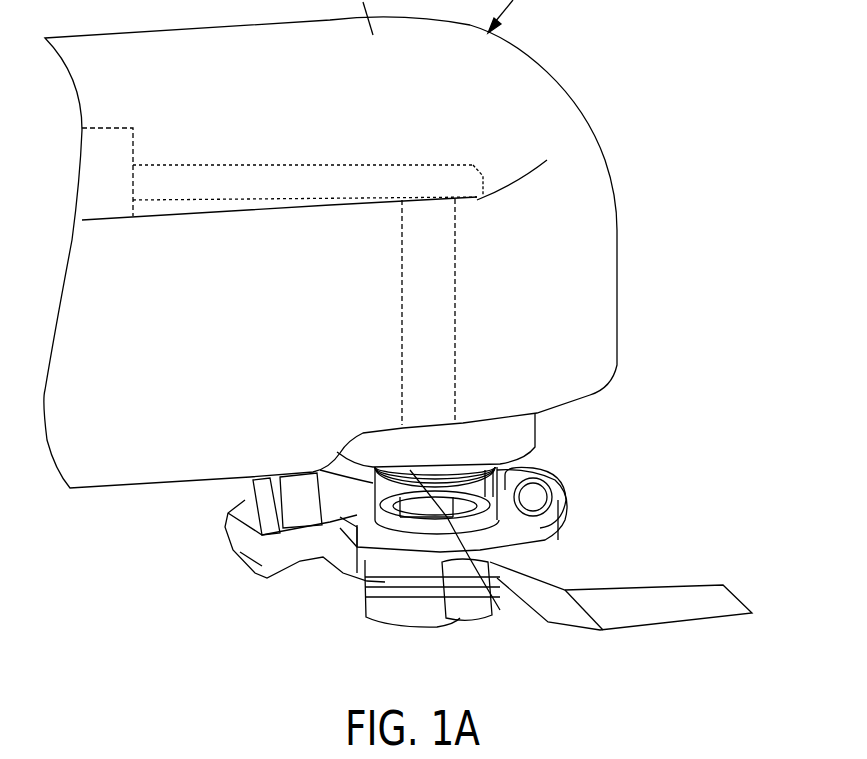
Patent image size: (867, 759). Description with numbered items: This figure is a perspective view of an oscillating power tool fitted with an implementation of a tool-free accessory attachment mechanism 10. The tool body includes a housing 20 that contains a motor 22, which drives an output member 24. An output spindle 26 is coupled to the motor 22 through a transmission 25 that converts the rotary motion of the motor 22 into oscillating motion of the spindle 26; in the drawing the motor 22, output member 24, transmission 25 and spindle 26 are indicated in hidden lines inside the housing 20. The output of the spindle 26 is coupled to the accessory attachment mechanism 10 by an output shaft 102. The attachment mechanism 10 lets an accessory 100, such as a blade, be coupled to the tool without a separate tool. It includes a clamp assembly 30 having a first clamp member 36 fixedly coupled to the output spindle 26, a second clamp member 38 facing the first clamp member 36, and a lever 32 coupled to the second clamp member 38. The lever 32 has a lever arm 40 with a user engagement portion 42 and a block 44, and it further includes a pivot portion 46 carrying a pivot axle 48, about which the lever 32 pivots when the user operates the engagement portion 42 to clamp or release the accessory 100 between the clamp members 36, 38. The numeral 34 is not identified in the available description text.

The accessory attachment mechanism 10 is at (610, 400).
The housing 20 is at (605, 230).
The motor 22 is at (111, 126).
The output member 24 is at (228, 163).
The transmission 25 is at (470, 172).
The output spindle 26 is at (445, 310).
The clamp assembly 30 is at (608, 437).
The lever 32 is at (560, 555).
The bearing 34 is at (437, 500).
The first clamp member 36 is at (457, 620).
The second clamp member 38 is at (388, 612).
The lever arm 40 is at (283, 557).
The user engagement portion 42 is at (260, 580).
The block 44 is at (252, 495).
The pivot portion 46 is at (567, 532).
The pivot axle 48 is at (545, 497).
The accessory 100 is at (740, 600).
The output shaft 102 is at (466, 557).